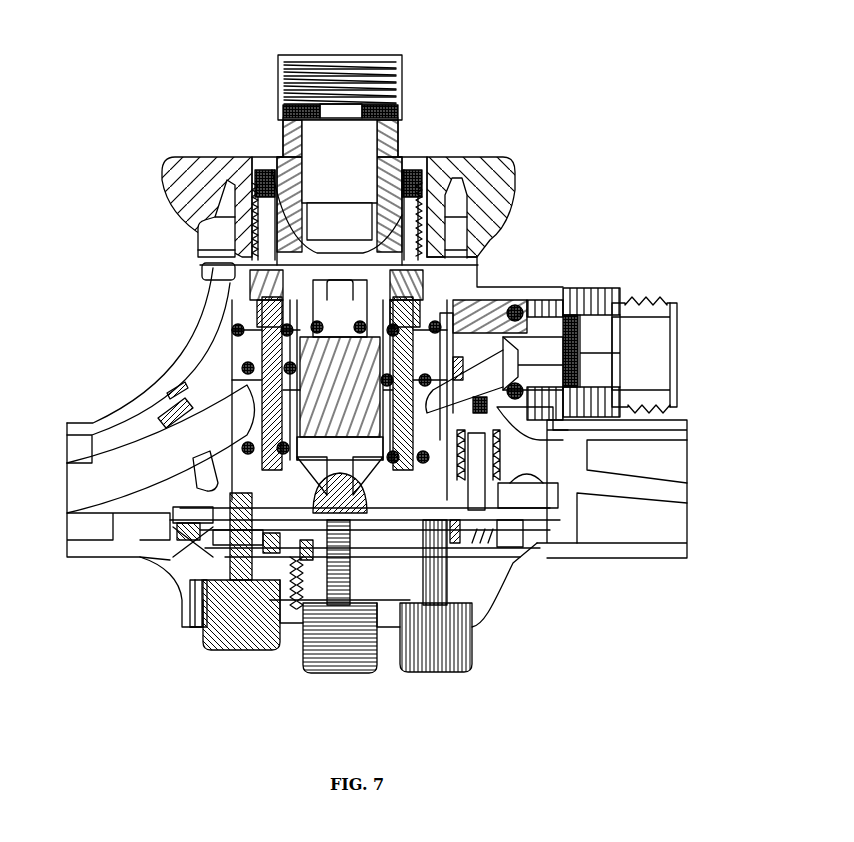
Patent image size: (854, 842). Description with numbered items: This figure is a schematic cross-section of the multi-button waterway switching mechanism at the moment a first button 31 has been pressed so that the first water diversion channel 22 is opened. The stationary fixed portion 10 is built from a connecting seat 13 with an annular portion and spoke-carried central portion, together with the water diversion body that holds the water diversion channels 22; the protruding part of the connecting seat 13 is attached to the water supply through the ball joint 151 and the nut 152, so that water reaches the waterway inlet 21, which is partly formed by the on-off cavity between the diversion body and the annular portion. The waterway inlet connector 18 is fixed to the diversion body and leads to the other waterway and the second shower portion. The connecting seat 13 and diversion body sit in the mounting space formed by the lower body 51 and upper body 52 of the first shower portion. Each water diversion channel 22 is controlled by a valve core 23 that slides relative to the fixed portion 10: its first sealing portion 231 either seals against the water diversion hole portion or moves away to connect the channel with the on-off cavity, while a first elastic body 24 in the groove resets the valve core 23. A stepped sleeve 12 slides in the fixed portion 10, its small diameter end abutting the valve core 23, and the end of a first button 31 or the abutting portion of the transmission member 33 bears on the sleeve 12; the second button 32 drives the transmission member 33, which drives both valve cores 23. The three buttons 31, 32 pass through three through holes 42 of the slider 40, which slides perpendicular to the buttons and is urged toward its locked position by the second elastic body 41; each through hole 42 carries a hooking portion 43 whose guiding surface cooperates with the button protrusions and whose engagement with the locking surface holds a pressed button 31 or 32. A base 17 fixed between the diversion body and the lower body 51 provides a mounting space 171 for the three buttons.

The fixed portion 10 is at (198, 273).
The sleeve 12 is at (225, 502).
The connecting seat 13 is at (467, 253).
The base 17 is at (205, 590).
The waterway inlet connector 18 is at (563, 312).
The waterway inlet 21 is at (327, 183).
The water diversion channel 22 is at (207, 423).
The valve core 23 is at (258, 352).
The first sealing portion 231 is at (250, 368).
The first elastic body 24 is at (244, 258).
The first button 31 is at (243, 650).
The second button 32 is at (345, 650).
The transmission member 33 is at (442, 542).
The slider 40 is at (187, 515).
The second elastic body 41 is at (490, 530).
The through hole 42 is at (212, 560).
The hooking portion 43 is at (213, 643).
The lower body 51 is at (98, 552).
The upper body 52 is at (103, 423).
The ball joint 151 is at (387, 165).
The nut 152 is at (420, 192).
The mounting space 171 is at (280, 595).